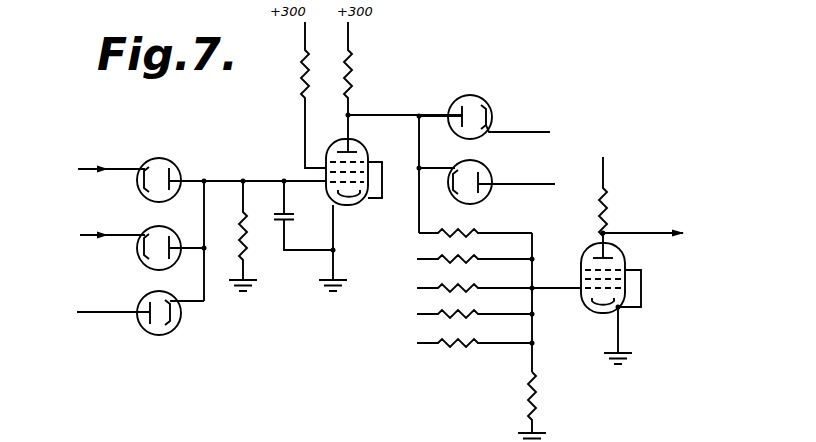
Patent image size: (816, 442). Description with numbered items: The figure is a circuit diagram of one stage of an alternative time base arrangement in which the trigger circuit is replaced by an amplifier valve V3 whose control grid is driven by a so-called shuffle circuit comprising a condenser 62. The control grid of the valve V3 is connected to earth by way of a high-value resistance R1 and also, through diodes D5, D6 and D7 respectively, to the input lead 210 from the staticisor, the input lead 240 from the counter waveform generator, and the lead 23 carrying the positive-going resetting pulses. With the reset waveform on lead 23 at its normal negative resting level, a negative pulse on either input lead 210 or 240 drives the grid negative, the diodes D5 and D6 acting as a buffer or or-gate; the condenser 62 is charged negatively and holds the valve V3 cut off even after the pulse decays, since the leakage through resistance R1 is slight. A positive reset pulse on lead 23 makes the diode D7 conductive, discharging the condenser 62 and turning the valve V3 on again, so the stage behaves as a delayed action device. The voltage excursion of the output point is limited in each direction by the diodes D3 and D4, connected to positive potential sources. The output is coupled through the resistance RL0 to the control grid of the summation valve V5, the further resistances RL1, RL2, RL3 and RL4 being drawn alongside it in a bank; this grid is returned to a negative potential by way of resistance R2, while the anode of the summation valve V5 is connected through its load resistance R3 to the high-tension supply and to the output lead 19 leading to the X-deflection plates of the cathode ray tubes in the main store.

The input lead 210 is at (106, 164).
The input lead 240 is at (85, 237).
The lead 23 is at (96, 313).
The condenser 62 is at (303, 215).
The output lead 19 is at (649, 233).
The diode D3 is at (481, 100).
The diode D4 is at (480, 162).
The diode D5 is at (167, 165).
The diode D6 is at (181, 218).
The diode D7 is at (181, 285).
The amplifier valve V3 is at (368, 161).
The summation valve V5 is at (587, 300).
The resistance R1 is at (251, 236).
The resistance R2 is at (542, 405).
The load resistance R3 is at (618, 197).
The resistance RL0 is at (475, 224).
The resistor RL1 is at (474, 251).
The resistor RL2 is at (499, 280).
The resistor RL3 is at (474, 307).
The resistor RL4 is at (474, 335).